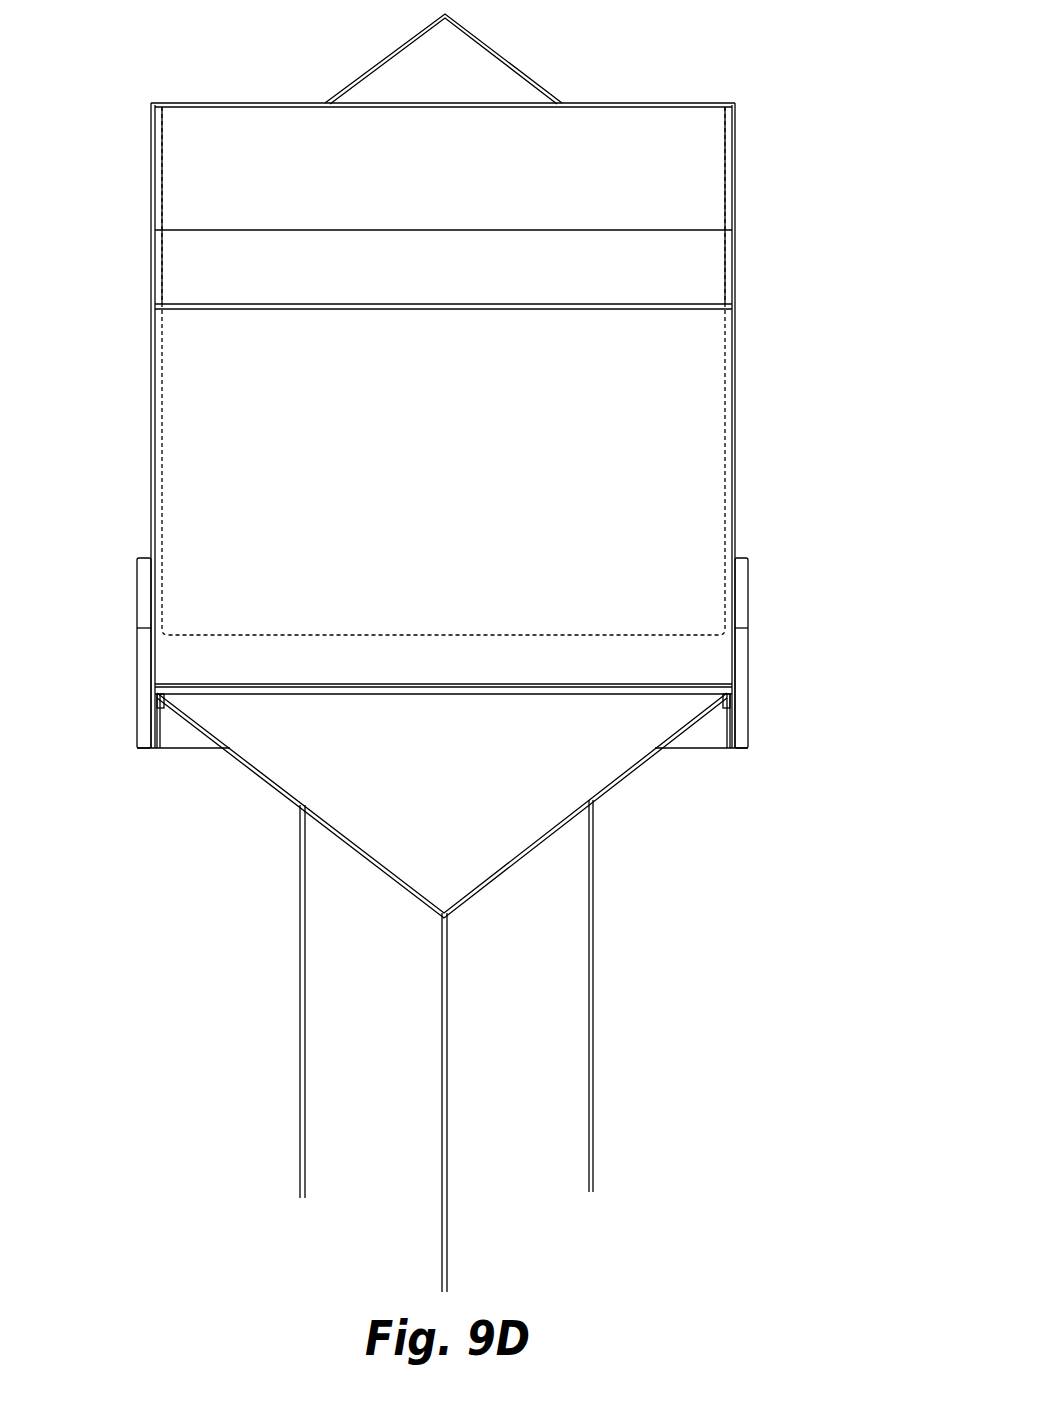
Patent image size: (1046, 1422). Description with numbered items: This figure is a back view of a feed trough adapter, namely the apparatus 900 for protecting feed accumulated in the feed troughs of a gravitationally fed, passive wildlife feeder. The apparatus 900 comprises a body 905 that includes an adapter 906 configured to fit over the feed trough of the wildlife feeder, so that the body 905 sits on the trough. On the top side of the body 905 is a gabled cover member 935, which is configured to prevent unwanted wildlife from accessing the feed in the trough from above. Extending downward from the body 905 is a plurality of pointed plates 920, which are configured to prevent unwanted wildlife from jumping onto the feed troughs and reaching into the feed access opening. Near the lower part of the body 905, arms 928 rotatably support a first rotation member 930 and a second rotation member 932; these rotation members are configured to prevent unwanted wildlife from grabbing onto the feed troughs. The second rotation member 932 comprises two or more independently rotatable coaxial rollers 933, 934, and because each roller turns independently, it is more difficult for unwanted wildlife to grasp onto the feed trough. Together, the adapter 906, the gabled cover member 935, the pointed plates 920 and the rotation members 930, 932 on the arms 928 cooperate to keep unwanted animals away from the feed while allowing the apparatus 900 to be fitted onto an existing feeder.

The apparatus 900 is at (465, 646).
The body 905 is at (536, 425).
The adapter 906 is at (530, 371).
The gabled cover member 935 is at (461, 80).
The arms 928 is at (453, 653).
The first rotation member 930 is at (451, 722).
The second rotation member 932 is at (446, 805).
The coaxial roller 933 is at (745, 776).
The coaxial roller 934 is at (149, 762).
The pointed plates 920 is at (446, 1046).